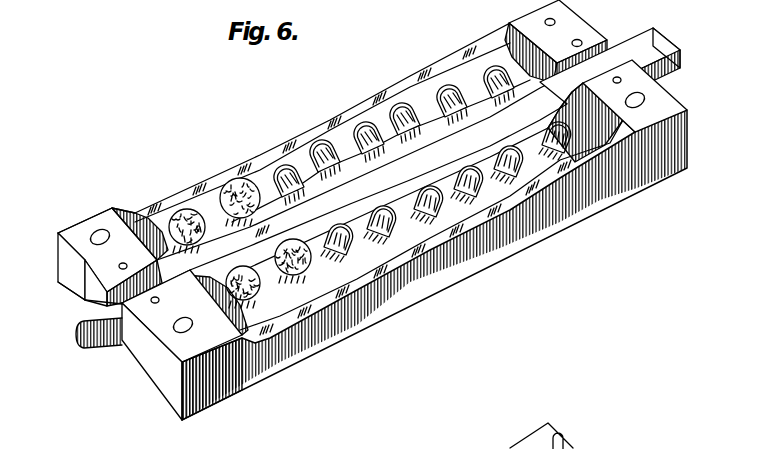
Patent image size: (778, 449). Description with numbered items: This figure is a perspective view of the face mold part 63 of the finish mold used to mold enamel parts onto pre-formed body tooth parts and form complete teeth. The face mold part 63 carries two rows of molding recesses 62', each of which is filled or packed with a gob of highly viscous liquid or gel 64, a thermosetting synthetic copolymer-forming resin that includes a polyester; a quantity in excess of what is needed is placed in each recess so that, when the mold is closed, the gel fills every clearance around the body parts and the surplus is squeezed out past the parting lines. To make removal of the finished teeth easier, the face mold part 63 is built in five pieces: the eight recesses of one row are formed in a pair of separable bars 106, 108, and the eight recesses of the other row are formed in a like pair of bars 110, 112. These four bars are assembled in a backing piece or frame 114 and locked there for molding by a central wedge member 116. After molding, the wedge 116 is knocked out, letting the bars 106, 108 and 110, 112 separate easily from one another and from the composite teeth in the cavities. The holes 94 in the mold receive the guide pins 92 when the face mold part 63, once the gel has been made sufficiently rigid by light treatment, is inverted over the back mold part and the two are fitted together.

The molding recess 62' is at (394, 102).
The gob of highly viscous liquid or gel 64 is at (228, 193).
The holes 94 is at (92, 232).
The separable bar 106 is at (72, 262).
The separable bar 108 is at (100, 297).
The separable bar 110 is at (132, 342).
The separable bar 112 is at (162, 333).
The backing piece or frame 114 is at (174, 401).
The central wedge member 116 is at (662, 47).
The face mold part 63 is at (510, 267).
The guide pins 92 is at (570, 446).